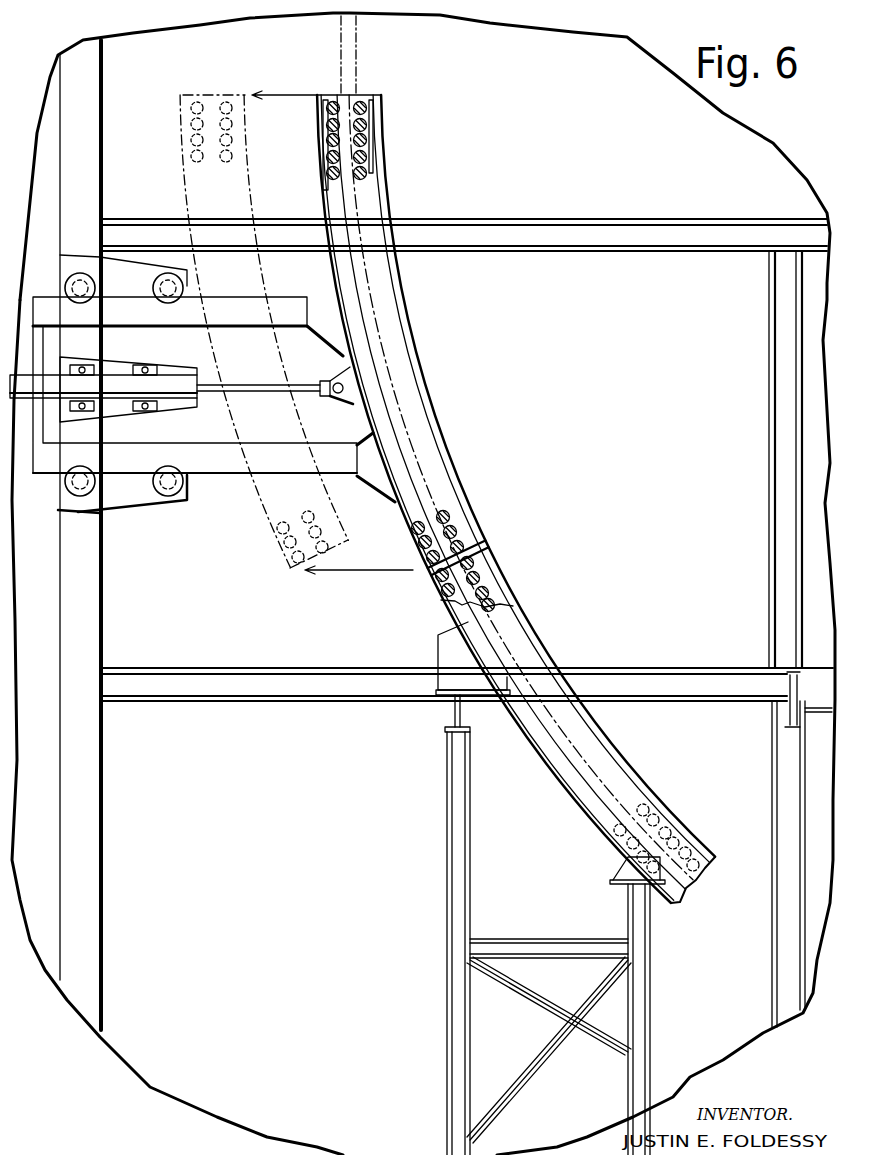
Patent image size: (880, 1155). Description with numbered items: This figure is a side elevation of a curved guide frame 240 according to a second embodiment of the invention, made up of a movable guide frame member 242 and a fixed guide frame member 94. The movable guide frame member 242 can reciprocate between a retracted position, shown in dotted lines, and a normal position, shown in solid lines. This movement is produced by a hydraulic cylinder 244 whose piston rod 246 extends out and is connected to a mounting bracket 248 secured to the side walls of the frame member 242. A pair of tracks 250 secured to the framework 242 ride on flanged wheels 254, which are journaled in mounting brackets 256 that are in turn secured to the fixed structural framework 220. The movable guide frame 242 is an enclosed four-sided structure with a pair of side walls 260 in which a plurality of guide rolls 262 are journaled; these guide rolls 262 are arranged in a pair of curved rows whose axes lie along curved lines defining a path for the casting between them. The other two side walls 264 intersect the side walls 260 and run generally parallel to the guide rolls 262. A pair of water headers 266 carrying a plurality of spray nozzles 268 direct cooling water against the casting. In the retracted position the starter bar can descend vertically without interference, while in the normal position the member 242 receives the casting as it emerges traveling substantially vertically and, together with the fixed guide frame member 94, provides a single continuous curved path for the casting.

The fixed guide frame member 94 is at (493, 459).
The fixed structural framework 220 is at (87, 607).
The guide frame 240 is at (505, 552).
The movable guide frame member 242 is at (427, 413).
The hydraulic cylinder 244 is at (170, 383).
The piston rod 246 is at (298, 385).
The mounting bracket 248 is at (348, 398).
The tracks 250 is at (288, 307).
The flanged wheels 254 is at (187, 502).
The mounting brackets 256 is at (90, 513).
The side walls 260 is at (433, 479).
The guide rolls 262 is at (449, 516).
The side walls 264 is at (448, 437).
The water headers 266 is at (326, 111).
The spray nozzles 268 is at (328, 136).